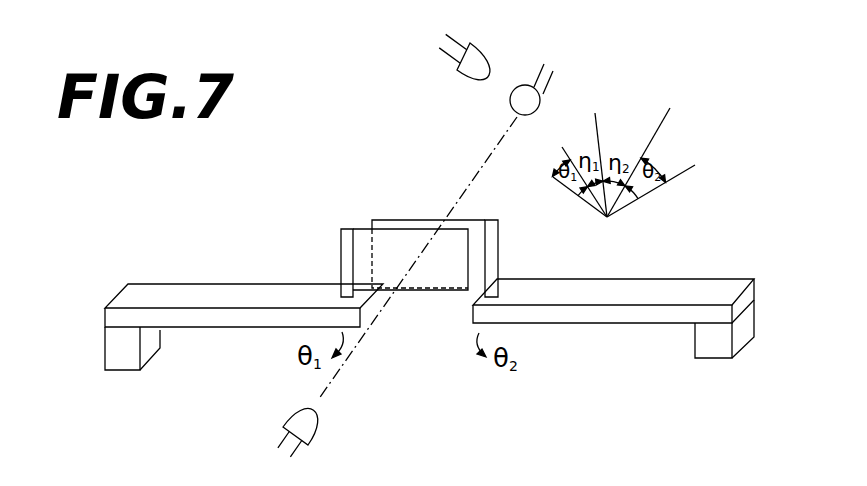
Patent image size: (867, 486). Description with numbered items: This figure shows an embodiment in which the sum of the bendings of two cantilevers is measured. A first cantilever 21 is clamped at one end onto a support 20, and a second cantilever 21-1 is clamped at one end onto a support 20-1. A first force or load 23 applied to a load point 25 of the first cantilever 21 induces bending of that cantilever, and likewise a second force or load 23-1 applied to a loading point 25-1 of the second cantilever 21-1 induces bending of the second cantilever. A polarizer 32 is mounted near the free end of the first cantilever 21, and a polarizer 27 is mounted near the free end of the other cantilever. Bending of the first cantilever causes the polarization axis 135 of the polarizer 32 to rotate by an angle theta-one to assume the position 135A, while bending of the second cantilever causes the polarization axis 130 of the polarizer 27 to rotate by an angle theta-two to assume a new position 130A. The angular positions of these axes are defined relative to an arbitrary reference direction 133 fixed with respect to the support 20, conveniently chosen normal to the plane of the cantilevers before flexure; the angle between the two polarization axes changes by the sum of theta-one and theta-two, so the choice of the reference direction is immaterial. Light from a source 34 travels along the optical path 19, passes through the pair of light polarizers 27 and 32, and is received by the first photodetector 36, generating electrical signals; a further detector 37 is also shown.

The optical axis line 19 is at (417, 258).
The support 20 is at (131, 366).
The support 20-1 is at (700, 346).
The first cantilever 21 is at (244, 290).
The second cantilever 21-1 is at (613, 287).
The first force or load 23 is at (321, 297).
The second force or load 23-1 is at (518, 297).
The load point 25 is at (303, 296).
The loading point 25-1 is at (557, 294).
The polarizer 27 is at (425, 240).
The polarizer 32 is at (420, 279).
The light source 34 is at (545, 91).
The first photodetector 36 is at (316, 437).
The upper detector 37 is at (477, 49).
The polarization axis 130 is at (679, 182).
The new position of polarization axis 130A is at (671, 152).
The reference direction 133 is at (621, 152).
The polarization axis 135 is at (563, 188).
The position of polarization axis 135A is at (568, 170).